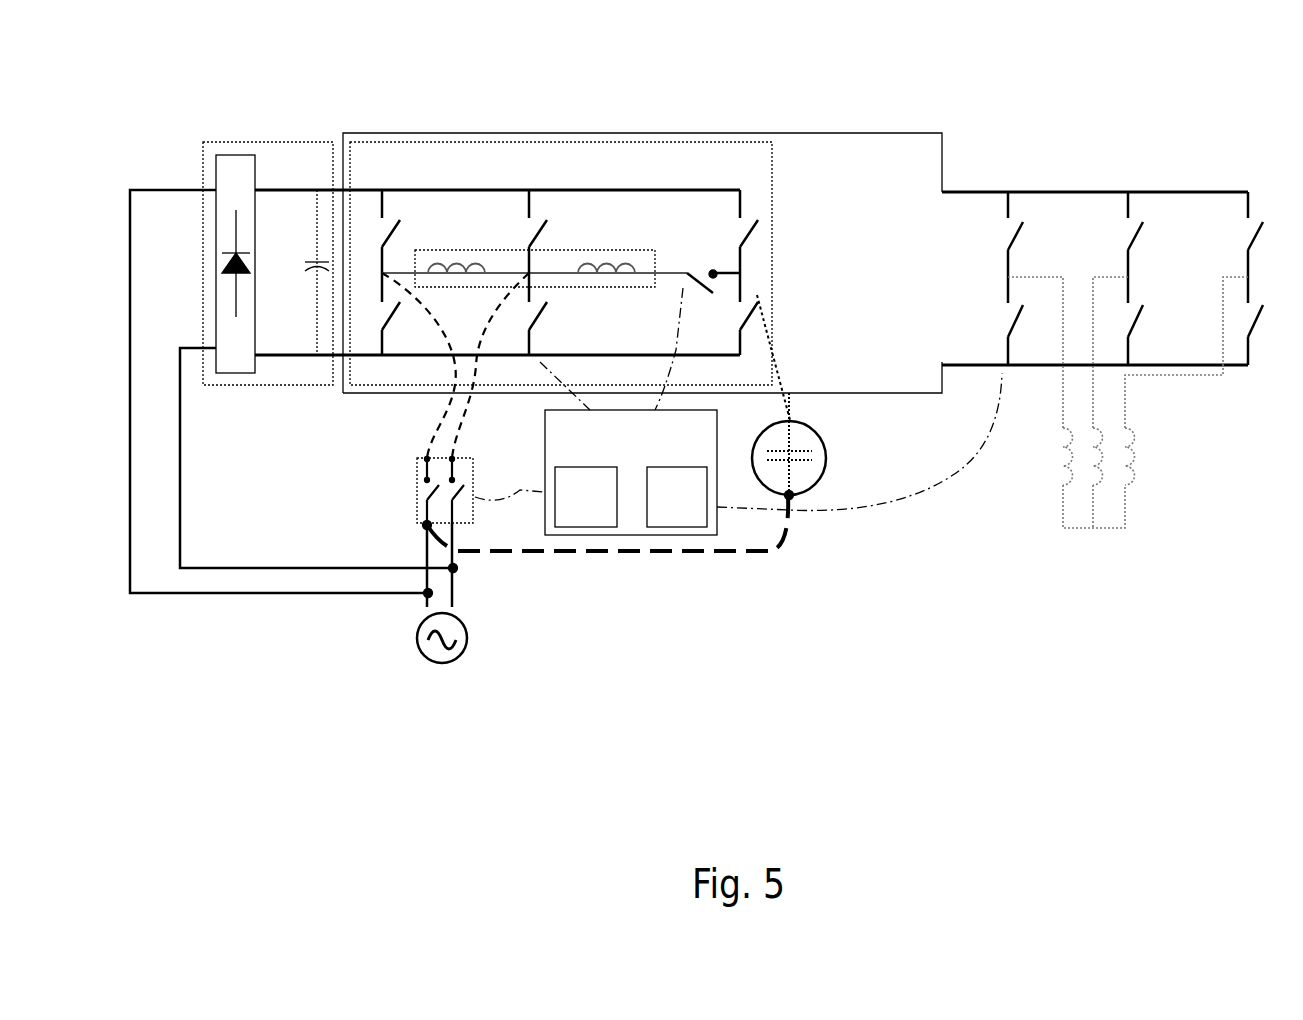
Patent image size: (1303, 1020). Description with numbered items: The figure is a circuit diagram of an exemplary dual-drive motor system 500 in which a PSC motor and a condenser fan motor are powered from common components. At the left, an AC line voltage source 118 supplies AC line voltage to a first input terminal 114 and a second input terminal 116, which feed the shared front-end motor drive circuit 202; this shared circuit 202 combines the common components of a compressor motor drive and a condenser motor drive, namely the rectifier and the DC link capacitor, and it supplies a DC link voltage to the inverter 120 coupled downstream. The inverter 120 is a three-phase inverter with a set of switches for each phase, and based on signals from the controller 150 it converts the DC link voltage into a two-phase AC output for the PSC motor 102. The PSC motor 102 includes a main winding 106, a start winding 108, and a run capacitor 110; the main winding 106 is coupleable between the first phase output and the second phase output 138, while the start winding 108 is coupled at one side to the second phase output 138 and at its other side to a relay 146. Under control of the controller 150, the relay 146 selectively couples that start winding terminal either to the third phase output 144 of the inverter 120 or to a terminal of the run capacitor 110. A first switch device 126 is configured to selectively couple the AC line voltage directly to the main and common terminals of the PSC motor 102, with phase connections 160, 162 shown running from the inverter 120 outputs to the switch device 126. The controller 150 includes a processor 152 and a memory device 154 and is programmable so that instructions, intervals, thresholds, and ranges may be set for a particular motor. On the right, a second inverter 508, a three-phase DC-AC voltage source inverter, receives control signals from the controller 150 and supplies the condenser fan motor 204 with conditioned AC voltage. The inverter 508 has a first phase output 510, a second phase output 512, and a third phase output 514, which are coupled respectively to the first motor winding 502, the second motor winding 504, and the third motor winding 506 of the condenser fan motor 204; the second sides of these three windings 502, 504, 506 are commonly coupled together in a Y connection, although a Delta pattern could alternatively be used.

The dual-drive motor system 500 is at (296, 45).
The shared front-end motor drive circuit 202 is at (221, 143).
The inverter 120 is at (440, 139).
The PSC motor 102 is at (655, 251).
The main winding 106 is at (458, 258).
The start winding 108 is at (611, 276).
The second phase output 138 is at (543, 306).
The third phase output 144 is at (740, 268).
The relay 146 is at (712, 283).
The run capacitor 110 is at (807, 427).
The controller 150 is at (548, 421).
The processor 152 is at (586, 497).
The memory device 154 is at (677, 497).
The first switch device 126 is at (417, 470).
The first phase line 160 is at (438, 421).
The second phase line 162 is at (453, 433).
The first input terminal 114 is at (425, 550).
The second input terminal 116 is at (455, 588).
The AC line voltage source 118 is at (418, 632).
The inverter 508 is at (1056, 191).
The first phase output 510 is at (1008, 275).
The second phase output 512 is at (1128, 275).
The third phase output 514 is at (1248, 275).
The first motor winding 502 is at (1064, 447).
The second motor winding 504 is at (1098, 485).
The third motor winding 506 is at (1134, 437).
The condenser fan motor 204 is at (1157, 528).